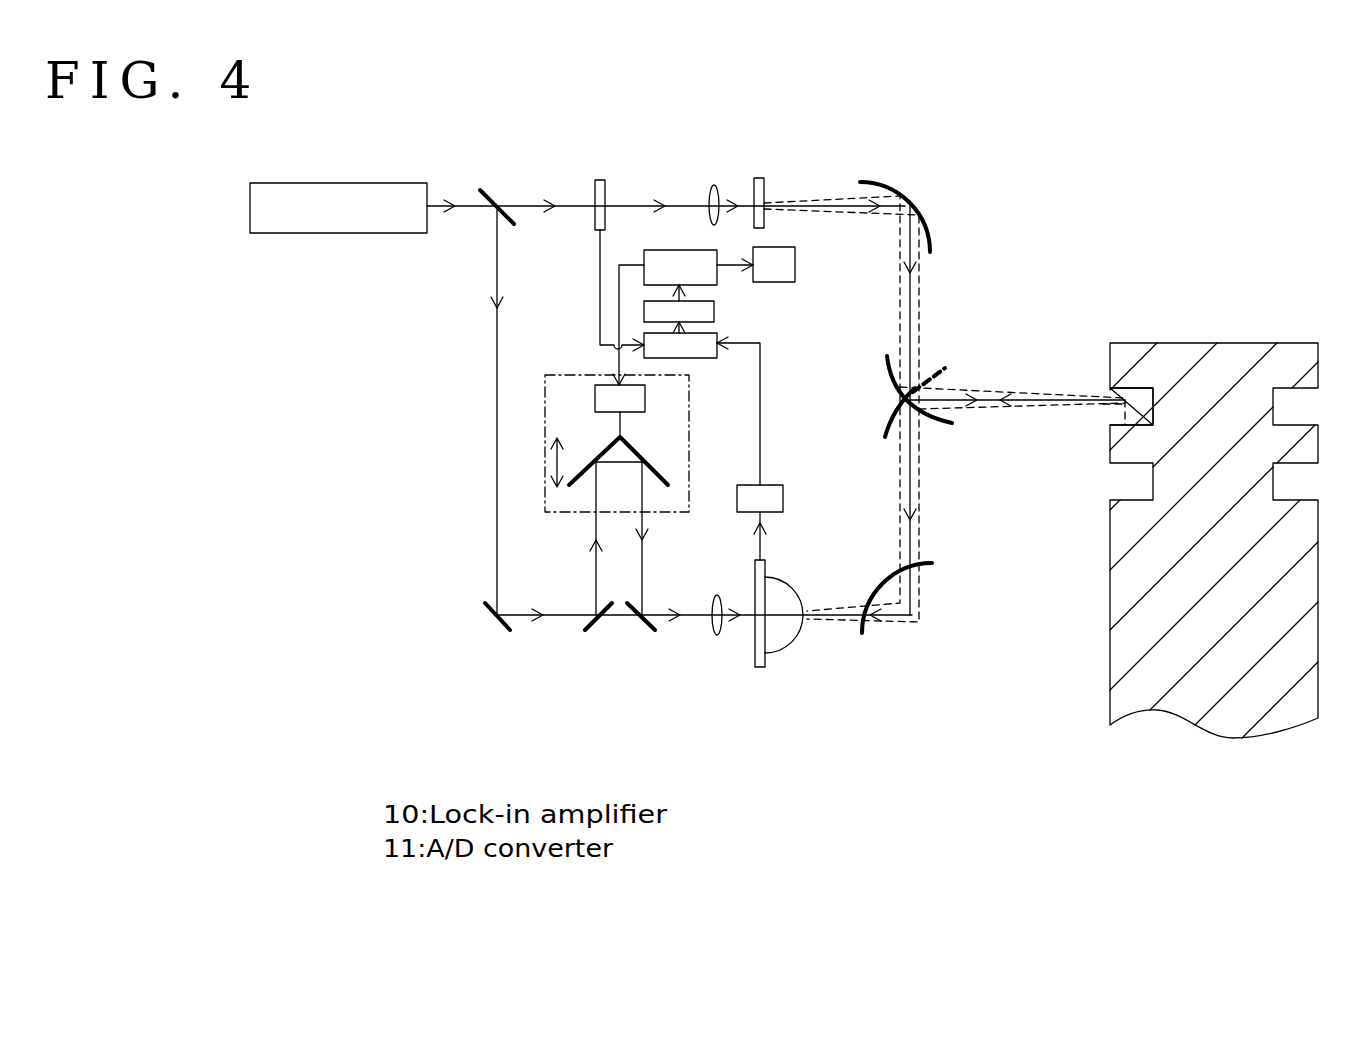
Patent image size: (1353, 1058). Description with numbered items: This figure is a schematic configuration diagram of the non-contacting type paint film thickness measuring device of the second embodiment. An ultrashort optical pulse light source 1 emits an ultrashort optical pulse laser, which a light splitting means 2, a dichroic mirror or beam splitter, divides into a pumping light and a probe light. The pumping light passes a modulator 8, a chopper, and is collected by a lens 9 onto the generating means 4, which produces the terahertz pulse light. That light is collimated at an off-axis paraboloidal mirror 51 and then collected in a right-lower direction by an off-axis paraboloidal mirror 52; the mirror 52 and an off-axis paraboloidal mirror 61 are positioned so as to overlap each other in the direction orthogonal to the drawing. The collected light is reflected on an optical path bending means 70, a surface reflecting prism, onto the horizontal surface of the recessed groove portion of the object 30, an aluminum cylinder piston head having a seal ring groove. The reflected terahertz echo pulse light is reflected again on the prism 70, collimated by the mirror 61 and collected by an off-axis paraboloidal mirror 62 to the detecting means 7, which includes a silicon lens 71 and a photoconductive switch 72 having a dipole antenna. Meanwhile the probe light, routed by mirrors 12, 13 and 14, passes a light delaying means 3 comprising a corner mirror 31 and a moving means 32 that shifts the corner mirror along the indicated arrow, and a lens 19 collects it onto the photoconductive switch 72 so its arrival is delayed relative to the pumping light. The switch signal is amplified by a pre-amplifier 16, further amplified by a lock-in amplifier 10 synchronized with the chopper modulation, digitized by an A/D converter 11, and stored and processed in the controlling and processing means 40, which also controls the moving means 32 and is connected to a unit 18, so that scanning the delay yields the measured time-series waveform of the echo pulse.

The ultrashort optical pulse light source 1 is at (355, 183).
The light splitting means 2 is at (497, 195).
The light delaying means 3 is at (545, 430).
The generating means 4 is at (760, 178).
The detecting means 7 is at (764, 644).
The modulator 8 is at (605, 192).
The lens 9 is at (716, 185).
The lock-in amplifier 10 is at (717, 340).
The A/D converter 11 is at (714, 310).
The mirror 12 is at (497, 628).
The mirror 13 is at (596, 628).
The mirror 14 is at (643, 628).
The pre-amplifier 16 is at (780, 512).
The computer 18 is at (795, 250).
The lens 19 is at (717, 597).
The object 30 is at (1290, 343).
The corner mirror 31 is at (635, 450).
The moving means 32 is at (645, 400).
The controlling and processing means 40 is at (679, 250).
The off-axis paraboloidal mirror 51 is at (928, 212).
The off-axis paraboloidal mirror 52 is at (887, 375).
The off-axis paraboloidal mirror 61 is at (888, 425).
The off-axis paraboloidal mirror 62 is at (912, 615).
The optical path bending means 70 is at (1138, 400).
The silicon lens 71 is at (793, 642).
The photoconductive switch 72 is at (755, 632).